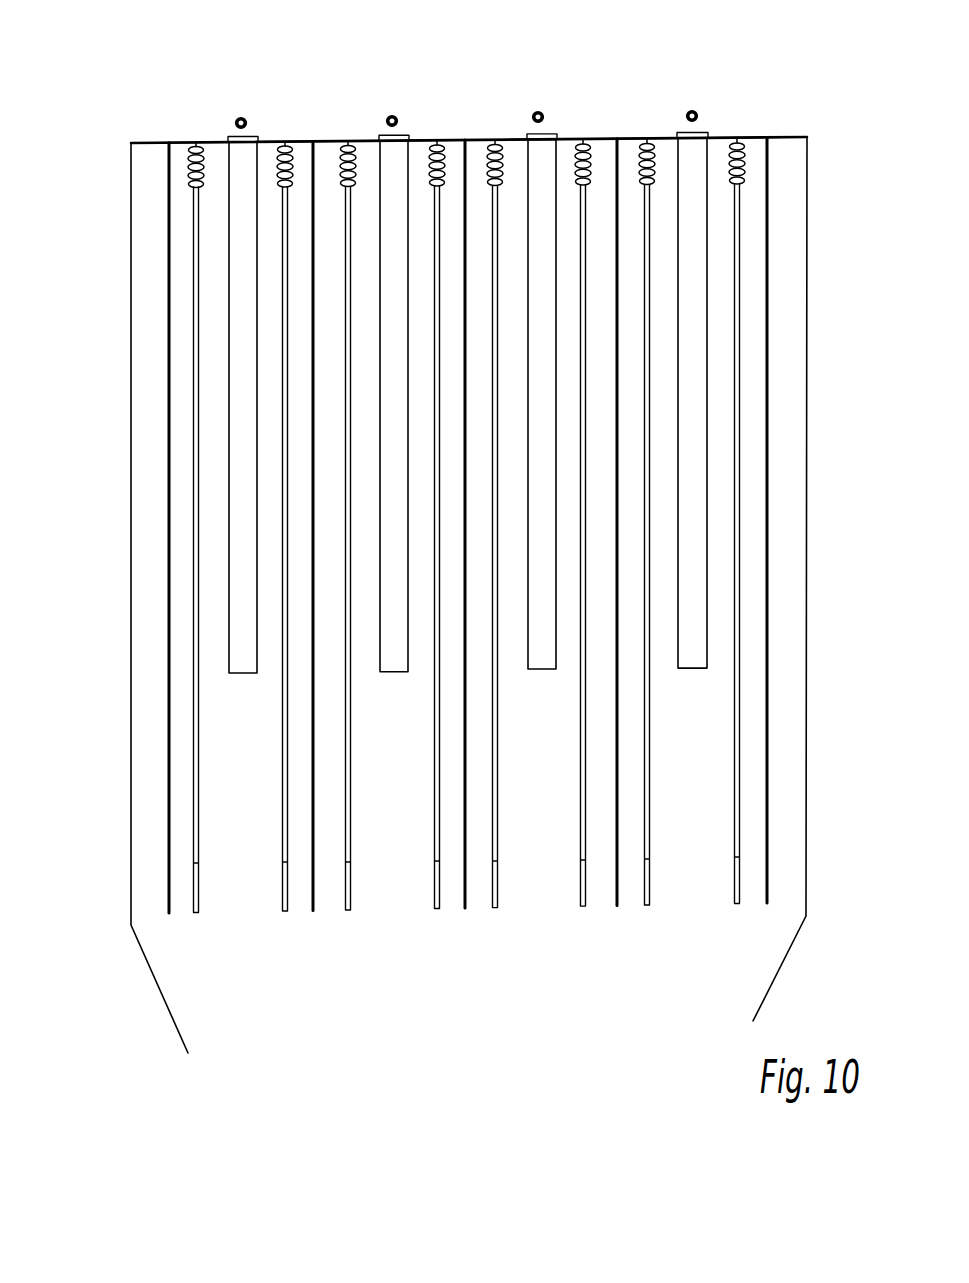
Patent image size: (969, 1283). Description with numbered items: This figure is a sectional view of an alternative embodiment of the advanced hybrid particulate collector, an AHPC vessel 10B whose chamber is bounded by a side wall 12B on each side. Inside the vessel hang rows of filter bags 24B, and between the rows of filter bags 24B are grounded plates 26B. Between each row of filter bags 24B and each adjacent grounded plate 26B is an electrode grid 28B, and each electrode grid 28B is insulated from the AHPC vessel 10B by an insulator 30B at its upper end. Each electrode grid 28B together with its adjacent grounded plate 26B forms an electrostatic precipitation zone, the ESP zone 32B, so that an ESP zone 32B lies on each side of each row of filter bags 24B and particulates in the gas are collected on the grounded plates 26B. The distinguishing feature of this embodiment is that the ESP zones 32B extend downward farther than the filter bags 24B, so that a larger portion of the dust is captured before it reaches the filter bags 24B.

The AHPC vessel 10B is at (767, 63).
The side wall 12B is at (133, 277).
The filter bag 24B is at (386, 255).
The grounded plate 26B is at (318, 413).
The electrode grid 28B is at (352, 490).
The insulator 30B is at (196, 145).
The ESP zone 32B is at (305, 303).